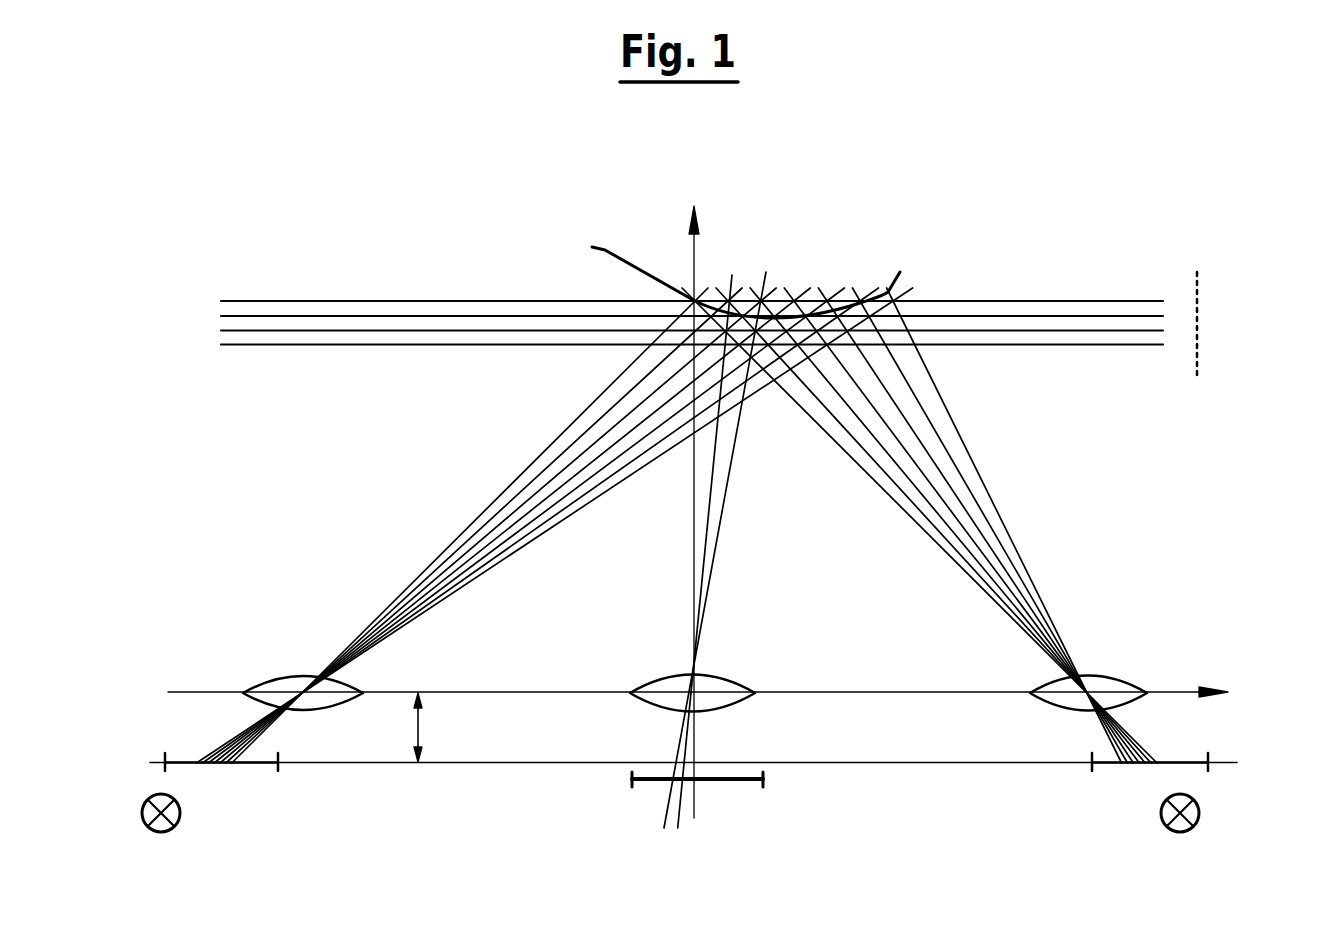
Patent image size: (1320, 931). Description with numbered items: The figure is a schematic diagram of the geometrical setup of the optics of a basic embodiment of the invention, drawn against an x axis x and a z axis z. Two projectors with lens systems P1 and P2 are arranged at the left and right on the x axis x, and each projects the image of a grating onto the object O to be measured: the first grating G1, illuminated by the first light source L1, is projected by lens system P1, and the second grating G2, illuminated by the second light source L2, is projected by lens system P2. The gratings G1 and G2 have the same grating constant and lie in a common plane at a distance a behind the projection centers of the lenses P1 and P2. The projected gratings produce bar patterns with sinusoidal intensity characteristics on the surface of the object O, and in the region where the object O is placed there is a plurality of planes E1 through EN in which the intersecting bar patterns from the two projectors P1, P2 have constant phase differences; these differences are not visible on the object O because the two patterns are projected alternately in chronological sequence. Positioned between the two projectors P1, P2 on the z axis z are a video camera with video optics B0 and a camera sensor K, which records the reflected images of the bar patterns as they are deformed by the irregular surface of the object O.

The object O is at (608, 246).
The plane E1 is at (721, 276).
The plane EN is at (722, 347).
The first projector lens system P1 is at (296, 676).
The second projector lens system P2 is at (1112, 677).
The video optics B0 is at (655, 678).
The first grating G1 is at (251, 764).
The second grating G2 is at (1107, 766).
The camera sensor K is at (650, 782).
The first light source L1 is at (176, 818).
The second light source L2 is at (1194, 817).
The distance a is at (430, 727).
The x axis x is at (708, 692).
The z axis z is at (707, 512).